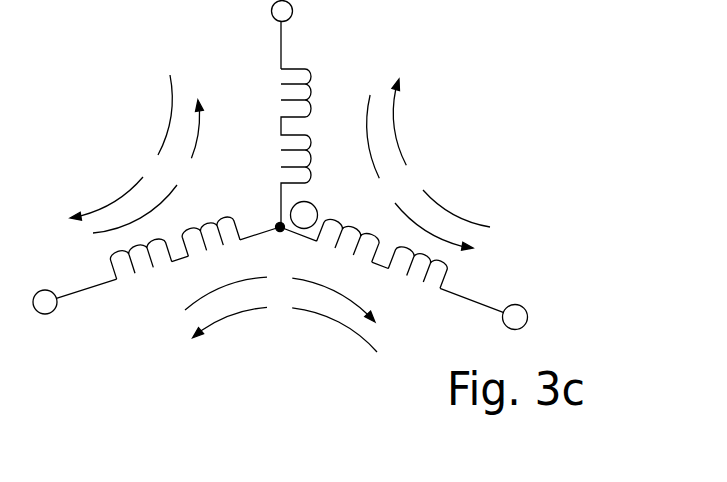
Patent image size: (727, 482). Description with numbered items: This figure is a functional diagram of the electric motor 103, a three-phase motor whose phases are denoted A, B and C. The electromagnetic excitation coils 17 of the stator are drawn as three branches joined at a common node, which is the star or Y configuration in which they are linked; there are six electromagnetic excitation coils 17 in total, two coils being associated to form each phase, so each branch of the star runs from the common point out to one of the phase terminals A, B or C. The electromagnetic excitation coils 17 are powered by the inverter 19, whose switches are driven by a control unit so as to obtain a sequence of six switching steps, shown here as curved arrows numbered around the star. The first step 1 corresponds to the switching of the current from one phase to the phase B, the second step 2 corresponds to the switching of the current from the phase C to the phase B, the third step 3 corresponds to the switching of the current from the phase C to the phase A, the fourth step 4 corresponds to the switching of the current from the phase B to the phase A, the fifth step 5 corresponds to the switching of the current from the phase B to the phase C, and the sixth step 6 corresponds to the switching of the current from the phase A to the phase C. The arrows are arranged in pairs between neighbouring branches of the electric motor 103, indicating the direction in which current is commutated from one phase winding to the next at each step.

The electric motor 103 is at (297, 176).
The electromagnetic excitation coils 17 is at (310, 92).
The inverter 19 is at (91, 0).
The first step 1 is at (420, 172).
The second step 2 is at (280, 294).
The third step 3 is at (148, 166).
The fourth step 4 is at (441, 153).
The fifth step 5 is at (285, 324).
The sixth step 6 is at (121, 147).